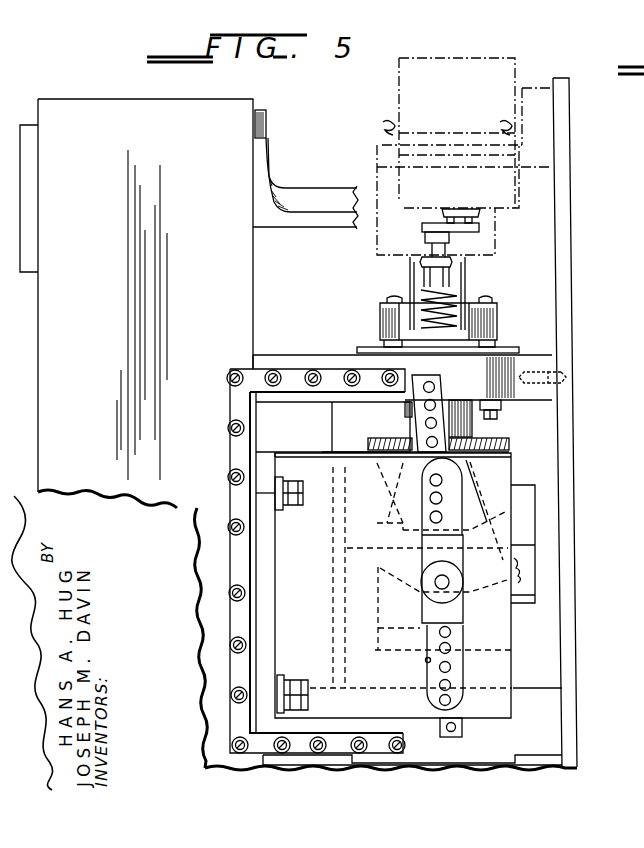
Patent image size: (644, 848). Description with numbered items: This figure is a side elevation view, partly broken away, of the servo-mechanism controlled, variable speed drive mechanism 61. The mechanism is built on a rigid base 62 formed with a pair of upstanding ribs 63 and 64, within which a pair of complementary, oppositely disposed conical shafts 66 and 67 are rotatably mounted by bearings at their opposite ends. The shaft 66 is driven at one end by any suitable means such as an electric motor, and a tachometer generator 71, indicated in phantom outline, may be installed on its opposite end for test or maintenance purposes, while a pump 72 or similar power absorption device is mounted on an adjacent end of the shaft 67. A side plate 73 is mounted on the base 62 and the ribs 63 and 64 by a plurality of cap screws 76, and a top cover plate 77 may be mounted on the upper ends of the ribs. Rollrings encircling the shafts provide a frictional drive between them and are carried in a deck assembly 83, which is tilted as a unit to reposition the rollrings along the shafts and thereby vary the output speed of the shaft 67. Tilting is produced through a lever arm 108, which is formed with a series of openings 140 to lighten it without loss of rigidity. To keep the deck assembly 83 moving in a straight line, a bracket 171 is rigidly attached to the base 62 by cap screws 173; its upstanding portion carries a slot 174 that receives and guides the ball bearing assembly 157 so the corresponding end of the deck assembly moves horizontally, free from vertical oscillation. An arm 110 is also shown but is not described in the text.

The variable speed drive mechanism 61 is at (596, 644).
The rigid base 62 is at (133, 107).
The upstanding rib 63 is at (533, 358).
The upstanding rib 64 is at (540, 697).
The conical shaft 66 is at (410, 440).
The conical shaft 67 is at (508, 445).
The tachometer generator 71 is at (409, 83).
The pump 72 is at (387, 180).
The side plate 73 is at (231, 410).
The cap screw 76 is at (228, 478).
The top cover plate 77 is at (583, 422).
The deck assembly 83 is at (538, 495).
The lever arm 108 is at (442, 383).
The arm 110 is at (302, 190).
The openings 140 is at (450, 668).
The ball bearing assembly 157 is at (460, 592).
The bracket 171 is at (308, 463).
The cap screw 173 is at (295, 507).
The slot 174 is at (426, 661).